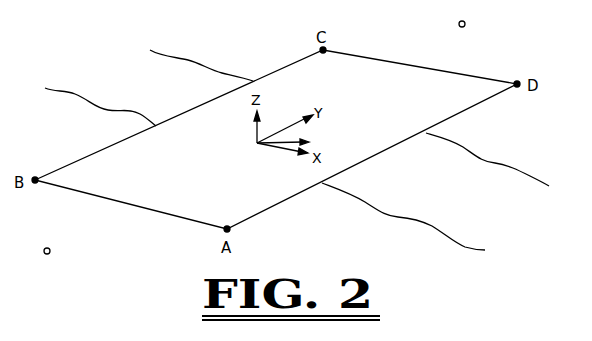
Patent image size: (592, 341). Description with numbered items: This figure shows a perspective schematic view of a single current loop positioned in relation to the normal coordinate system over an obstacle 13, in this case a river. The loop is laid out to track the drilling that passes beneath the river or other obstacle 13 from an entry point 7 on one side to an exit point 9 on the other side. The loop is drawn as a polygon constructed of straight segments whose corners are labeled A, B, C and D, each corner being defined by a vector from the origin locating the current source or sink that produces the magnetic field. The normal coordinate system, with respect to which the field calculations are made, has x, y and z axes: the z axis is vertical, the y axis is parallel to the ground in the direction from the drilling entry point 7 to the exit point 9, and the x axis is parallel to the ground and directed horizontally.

The entry point 7 is at (44, 251).
The exit point 9 is at (465, 23).
The obstacle 13 is at (500, 158).